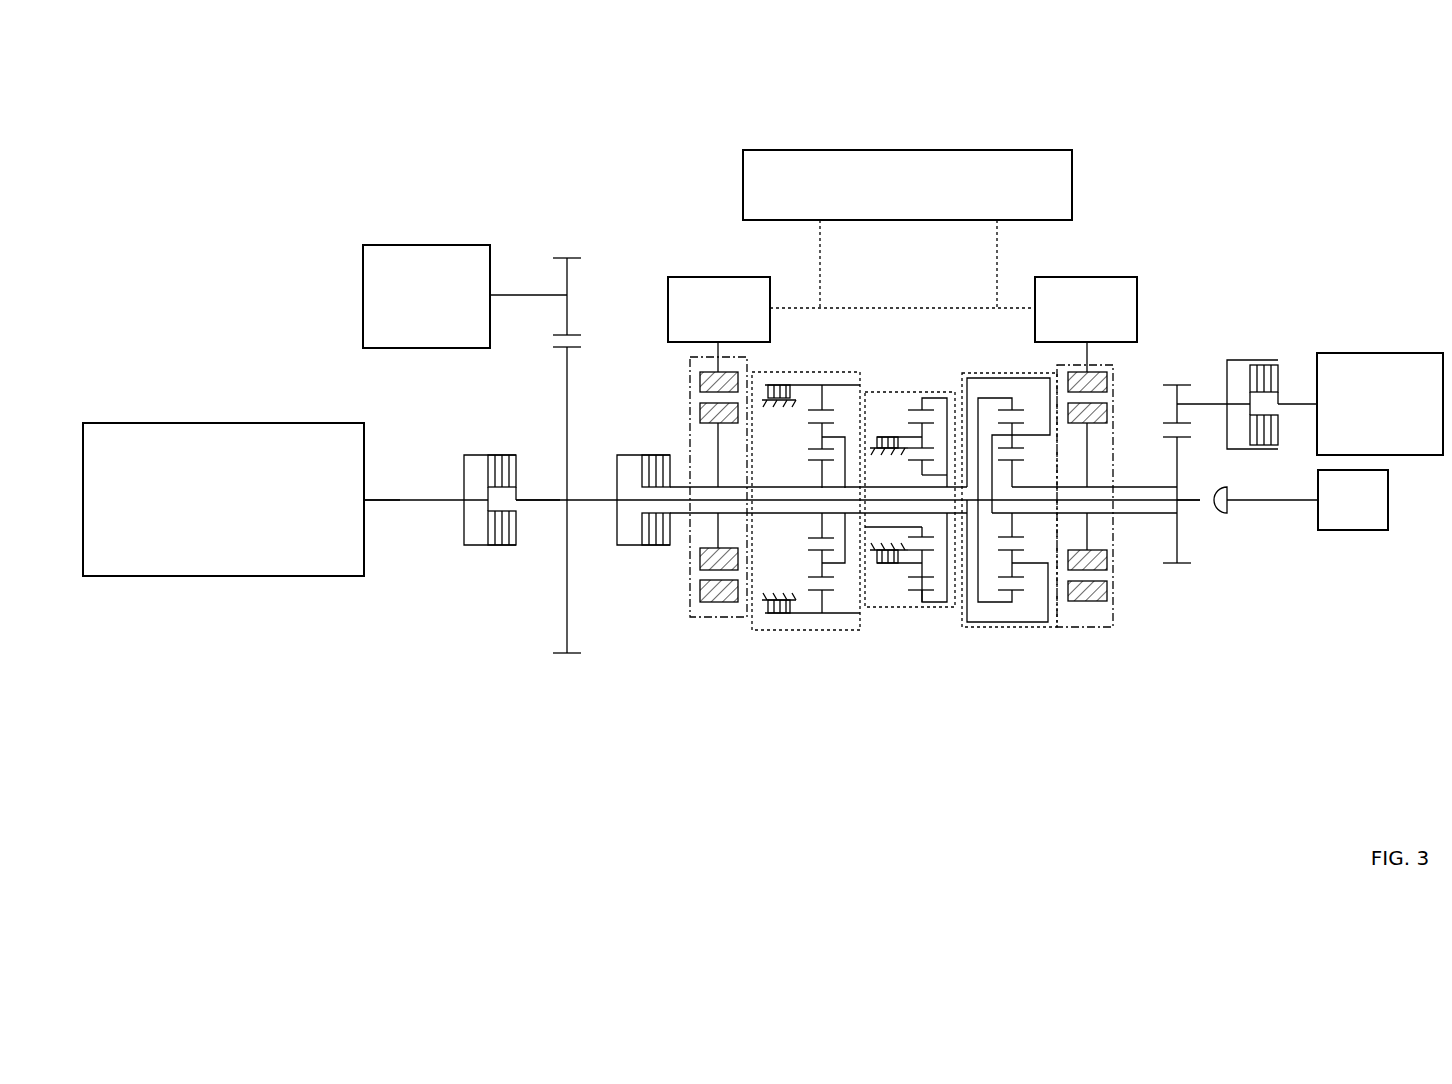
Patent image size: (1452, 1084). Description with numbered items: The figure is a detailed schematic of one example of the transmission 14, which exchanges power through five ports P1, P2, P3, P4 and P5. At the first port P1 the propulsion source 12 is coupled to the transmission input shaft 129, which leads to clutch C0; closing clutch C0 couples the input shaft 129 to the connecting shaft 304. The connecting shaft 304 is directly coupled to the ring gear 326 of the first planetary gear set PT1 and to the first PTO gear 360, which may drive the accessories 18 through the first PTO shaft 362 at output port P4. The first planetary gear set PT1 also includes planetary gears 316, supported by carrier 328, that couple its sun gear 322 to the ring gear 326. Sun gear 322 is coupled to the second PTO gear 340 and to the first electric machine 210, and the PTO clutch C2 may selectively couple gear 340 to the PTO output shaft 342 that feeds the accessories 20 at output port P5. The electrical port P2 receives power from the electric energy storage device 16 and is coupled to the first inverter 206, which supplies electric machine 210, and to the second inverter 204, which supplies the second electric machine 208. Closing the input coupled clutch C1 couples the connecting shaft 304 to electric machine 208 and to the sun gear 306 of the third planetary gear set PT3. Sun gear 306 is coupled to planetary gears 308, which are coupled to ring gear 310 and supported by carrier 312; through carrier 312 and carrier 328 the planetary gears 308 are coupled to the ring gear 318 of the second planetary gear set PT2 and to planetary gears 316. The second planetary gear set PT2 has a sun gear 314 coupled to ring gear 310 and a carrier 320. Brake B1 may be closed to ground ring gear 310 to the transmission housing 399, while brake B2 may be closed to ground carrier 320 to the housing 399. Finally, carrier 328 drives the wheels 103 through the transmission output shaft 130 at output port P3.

The propulsion source 12 is at (213, 511).
The transmission 14 is at (1190, 187).
The electric energy storage device 16 is at (896, 196).
The accessories 18 is at (415, 307).
The accessories 20 is at (1368, 414).
The wheels 103 is at (1353, 500).
The transmission input shaft 129 is at (379, 502).
The transmission output shaft 130 is at (1187, 503).
The second inverter 204 is at (701, 320).
The first inverter 206 is at (1068, 320).
The second electric machine 208 is at (690, 618).
The first electric machine 210 is at (1103, 626).
The connecting shaft 304 is at (524, 502).
The sun gear 306 is at (808, 461).
The planetary gears 308 is at (808, 449).
The ring gear 310 is at (822, 385).
The carrier 312 is at (845, 435).
The sun gear 314 is at (916, 468).
The planetary gears 316 is at (910, 426).
The ring gear 318 is at (918, 408).
The carrier 320 is at (902, 566).
The sun gear 322 is at (1013, 464).
The ring gear 326 is at (1016, 409).
The carrier 328 is at (1020, 623).
The PTO 2 gear 340 is at (1177, 385).
The PTO 2 output shaft 342 is at (1310, 408).
The PTO 1 gear 360 is at (572, 256).
The PTO 1 shaft 362 is at (494, 296).
The transmission housing 399 is at (765, 599).
The brake B1 is at (774, 383).
The brake B2 is at (882, 566).
The clutch C0 is at (480, 546).
The input coupled clutch C1 is at (621, 546).
The PTO 2 clutch C2 is at (1235, 360).
The port P1 is at (387, 494).
The port P2 is at (814, 240).
The output port P3 is at (1232, 513).
The output port P4 is at (523, 286).
The output port P5 is at (1285, 392).
The first planetary gear set PT1 is at (963, 628).
The second planetary gear set PT2 is at (870, 608).
The third planetary gear set PT3 is at (765, 631).